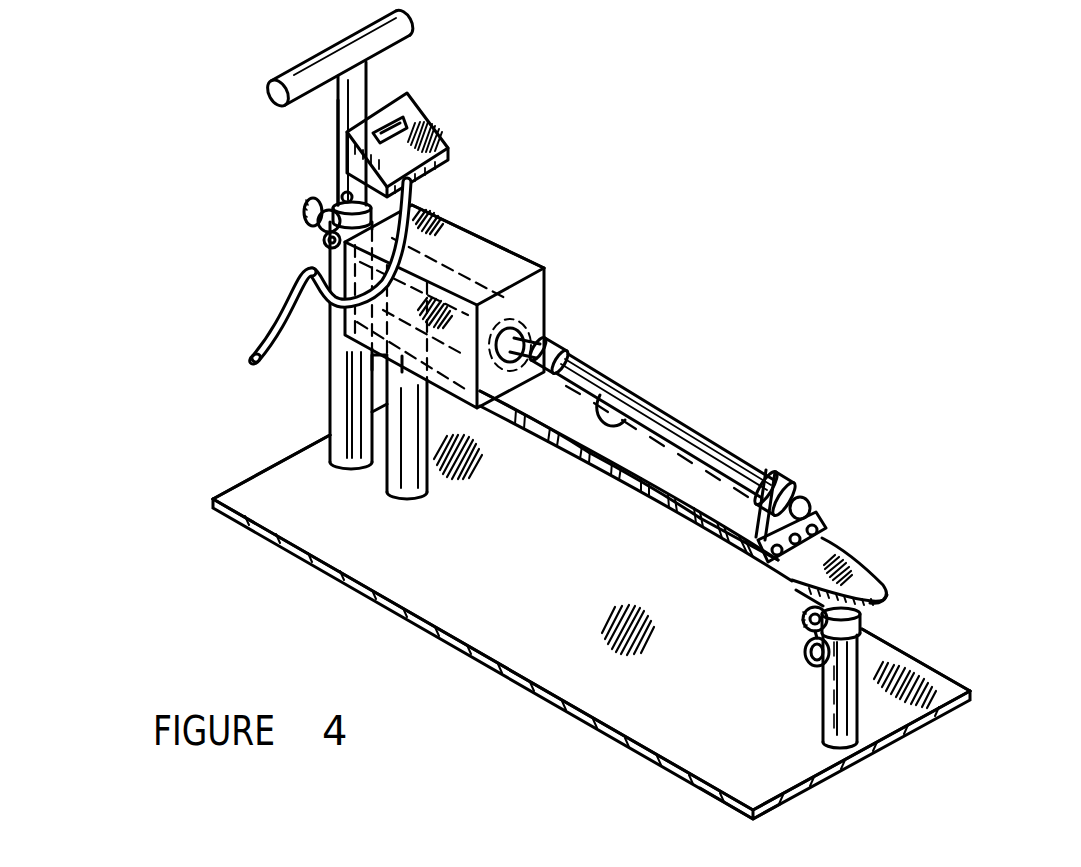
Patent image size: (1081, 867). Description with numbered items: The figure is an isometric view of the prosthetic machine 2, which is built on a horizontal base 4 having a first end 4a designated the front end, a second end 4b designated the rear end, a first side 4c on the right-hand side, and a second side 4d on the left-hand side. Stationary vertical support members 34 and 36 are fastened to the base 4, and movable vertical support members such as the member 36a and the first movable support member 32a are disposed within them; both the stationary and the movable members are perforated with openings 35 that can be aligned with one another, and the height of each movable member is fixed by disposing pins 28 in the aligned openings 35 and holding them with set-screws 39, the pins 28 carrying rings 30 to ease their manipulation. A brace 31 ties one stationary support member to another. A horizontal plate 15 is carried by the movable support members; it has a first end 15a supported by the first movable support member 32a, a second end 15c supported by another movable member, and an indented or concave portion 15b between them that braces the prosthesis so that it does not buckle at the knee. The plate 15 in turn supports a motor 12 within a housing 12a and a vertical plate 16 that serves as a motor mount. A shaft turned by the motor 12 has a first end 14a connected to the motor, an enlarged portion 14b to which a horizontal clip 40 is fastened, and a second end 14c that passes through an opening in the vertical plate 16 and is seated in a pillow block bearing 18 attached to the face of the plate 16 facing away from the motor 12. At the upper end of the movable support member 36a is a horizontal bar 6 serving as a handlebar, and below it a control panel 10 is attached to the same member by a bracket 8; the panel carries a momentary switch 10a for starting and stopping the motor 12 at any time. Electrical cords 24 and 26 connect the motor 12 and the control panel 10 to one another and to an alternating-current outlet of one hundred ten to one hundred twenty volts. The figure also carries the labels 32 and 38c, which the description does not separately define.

The prosthetic machine 2 is at (725, 112).
The horizontal base 4 is at (302, 618).
The first end 4a is at (876, 742).
The second end 4b is at (232, 488).
The first side 4c is at (943, 670).
The second side 4d is at (536, 692).
The horizontal bar 6 is at (290, 68).
The bracket 8 is at (377, 97).
The control panel 10 is at (444, 146).
The switch 10a is at (407, 110).
The motor 12 is at (530, 250).
The housing 12a is at (507, 252).
The first end of shaft 14a is at (522, 332).
The enlarged portion of shaft 14b is at (560, 365).
The second end of shaft 14c is at (694, 433).
The horizontal plate 15 is at (580, 514).
The first end of plate 15a is at (726, 552).
The indented portion 15b is at (656, 500).
The second end of plate 15c is at (525, 432).
The vertical plate 16 is at (781, 478).
The pillow block bearing 18 is at (806, 484).
The electrical cord 24 is at (410, 195).
The electrical cord 26 is at (272, 338).
The pins 28 is at (866, 636).
The rings 30 is at (822, 662).
The brace 31 is at (372, 368).
The base corner 32 is at (716, 790).
The first movable support member 32a is at (878, 615).
The first stationary vertical support member 34 is at (393, 463).
The openings 35 is at (344, 195).
The second stationary vertical support member 36 is at (340, 344).
The second movable vertical support member 36a is at (337, 102).
The coupling nut 38c is at (307, 203).
The set-screws 39 is at (798, 632).
The horizontal clip 40 is at (606, 410).